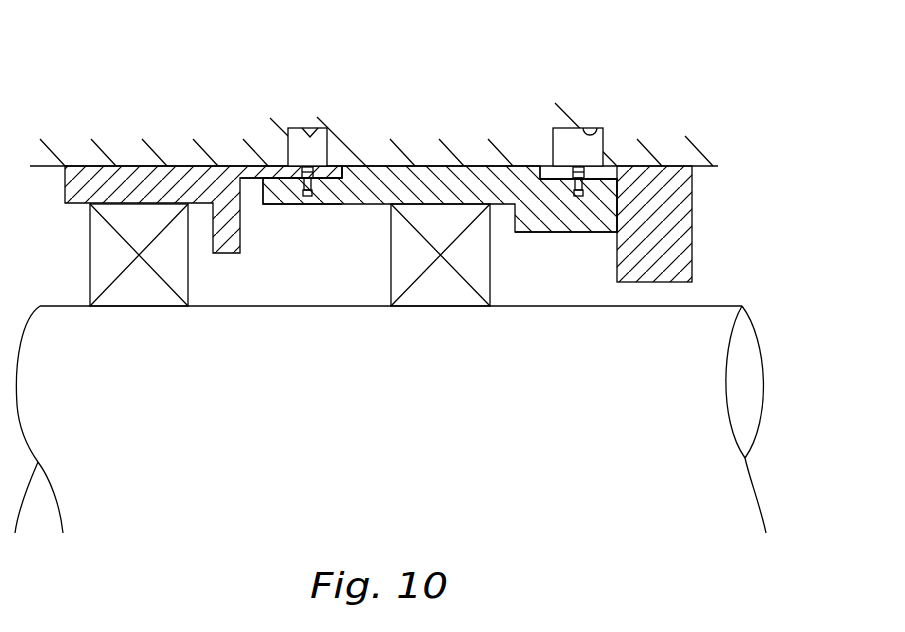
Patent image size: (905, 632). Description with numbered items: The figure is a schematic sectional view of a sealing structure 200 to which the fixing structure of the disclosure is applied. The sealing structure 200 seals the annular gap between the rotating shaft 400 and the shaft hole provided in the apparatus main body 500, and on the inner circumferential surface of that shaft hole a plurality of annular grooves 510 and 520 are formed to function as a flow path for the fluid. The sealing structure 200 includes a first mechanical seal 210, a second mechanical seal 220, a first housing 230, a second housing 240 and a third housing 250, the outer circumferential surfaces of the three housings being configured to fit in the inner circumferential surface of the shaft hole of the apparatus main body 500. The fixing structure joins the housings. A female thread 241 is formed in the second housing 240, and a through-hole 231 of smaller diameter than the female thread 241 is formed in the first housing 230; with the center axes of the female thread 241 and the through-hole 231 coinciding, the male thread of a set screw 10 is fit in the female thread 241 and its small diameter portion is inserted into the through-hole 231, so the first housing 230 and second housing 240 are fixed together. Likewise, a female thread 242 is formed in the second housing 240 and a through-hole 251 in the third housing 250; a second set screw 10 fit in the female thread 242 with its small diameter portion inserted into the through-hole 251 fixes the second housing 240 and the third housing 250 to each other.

The set screw 10 is at (306, 196).
The sealing structure 200 is at (752, 258).
The first mechanical seal 210 is at (146, 307).
The second mechanical seal 220 is at (452, 292).
The first housing 230 is at (186, 175).
The through-hole 231 is at (305, 168).
The second housing 240 is at (453, 220).
The female thread 241 is at (329, 206).
The female thread 242 is at (580, 203).
The third housing 250 is at (663, 176).
The through-hole 251 is at (578, 168).
The rotating shaft 400 is at (390, 419).
The apparatus main body 500 is at (374, 124).
The annular groove 510 is at (310, 128).
The annular groove 520 is at (597, 130).